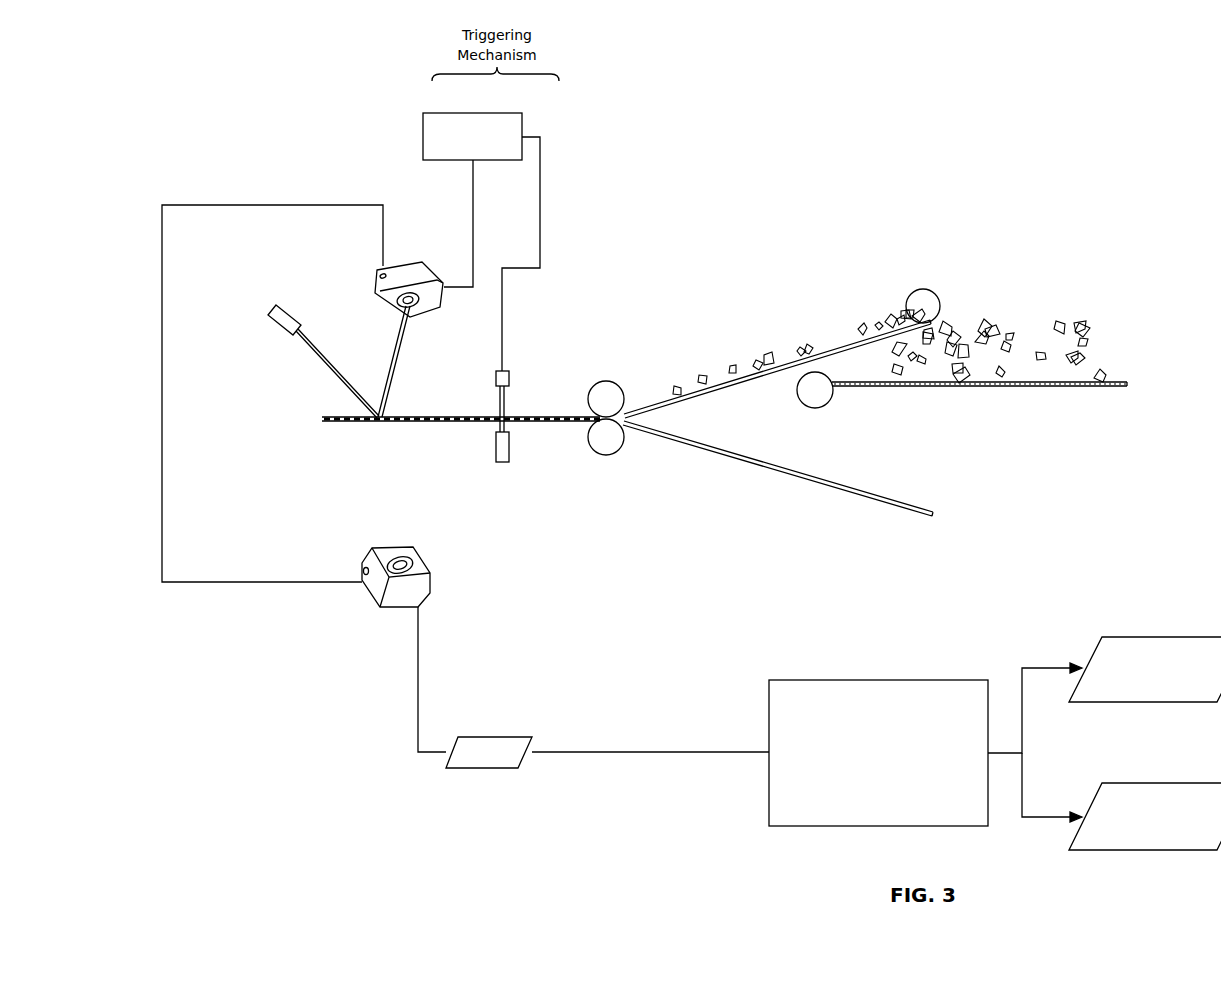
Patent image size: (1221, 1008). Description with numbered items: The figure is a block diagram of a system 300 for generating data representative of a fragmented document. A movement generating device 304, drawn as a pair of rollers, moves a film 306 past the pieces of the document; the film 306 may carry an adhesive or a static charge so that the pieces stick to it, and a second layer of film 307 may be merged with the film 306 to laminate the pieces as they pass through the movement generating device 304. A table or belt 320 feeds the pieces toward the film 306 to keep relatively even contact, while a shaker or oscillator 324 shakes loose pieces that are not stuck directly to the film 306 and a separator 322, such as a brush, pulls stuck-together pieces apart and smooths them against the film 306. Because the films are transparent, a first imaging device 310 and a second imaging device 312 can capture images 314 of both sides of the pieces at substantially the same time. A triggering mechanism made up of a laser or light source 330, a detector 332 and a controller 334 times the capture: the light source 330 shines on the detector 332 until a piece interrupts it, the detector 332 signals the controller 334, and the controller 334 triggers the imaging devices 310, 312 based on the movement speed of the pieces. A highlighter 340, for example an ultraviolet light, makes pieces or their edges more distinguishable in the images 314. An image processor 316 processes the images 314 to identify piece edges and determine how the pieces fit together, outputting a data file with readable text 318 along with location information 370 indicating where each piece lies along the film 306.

The system 300 is at (1040, 98).
The movement generating device 304 is at (613, 383).
The film 306 is at (812, 362).
The second layer of film 307 is at (857, 493).
The first imaging device 310 is at (377, 282).
The second imaging device 312 is at (430, 577).
The images 314 is at (488, 737).
The image processor 316 is at (878, 680).
The data file with readable text 318 is at (1158, 637).
The table or belt 320 is at (1043, 385).
The separator 322 is at (830, 400).
The shaker or oscillator 324 is at (911, 300).
The laser or light source 330 is at (496, 448).
The detector 332 is at (509, 371).
The controller 334 is at (423, 137).
The highlighter 340 is at (272, 306).
The location information 370 is at (1158, 783).